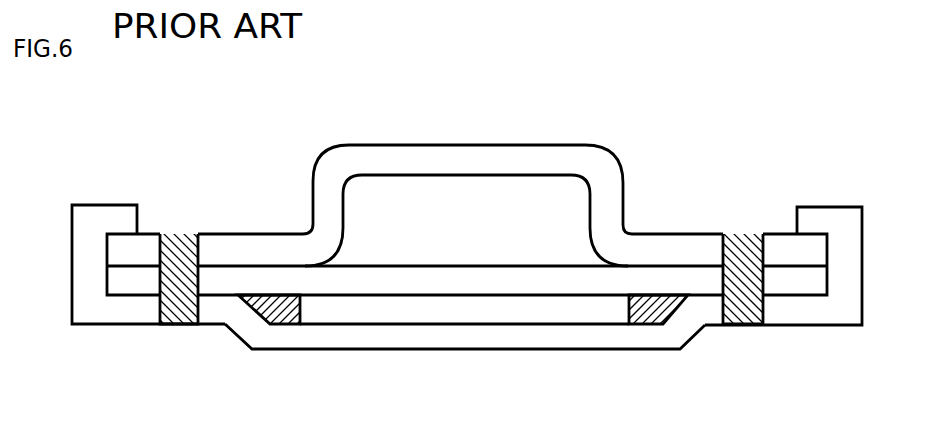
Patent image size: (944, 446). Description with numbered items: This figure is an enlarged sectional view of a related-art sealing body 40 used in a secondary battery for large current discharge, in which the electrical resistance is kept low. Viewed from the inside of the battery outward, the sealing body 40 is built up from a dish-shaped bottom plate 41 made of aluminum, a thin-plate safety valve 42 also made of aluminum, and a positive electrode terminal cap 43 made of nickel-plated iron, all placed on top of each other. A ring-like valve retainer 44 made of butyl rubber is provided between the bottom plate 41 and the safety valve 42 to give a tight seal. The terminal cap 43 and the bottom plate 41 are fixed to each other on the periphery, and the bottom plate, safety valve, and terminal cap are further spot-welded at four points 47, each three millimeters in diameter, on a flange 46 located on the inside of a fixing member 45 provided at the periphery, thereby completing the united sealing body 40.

The sealing body 40 is at (89, 135).
The bottom plate 41 is at (343, 335).
The safety valve 42 is at (455, 282).
The positive electrode terminal cap 43 is at (608, 180).
The valve retainer 44 is at (245, 315).
The fixing member 45 is at (823, 222).
The flange 46 is at (148, 234).
The spot-welded points 47 is at (207, 234).